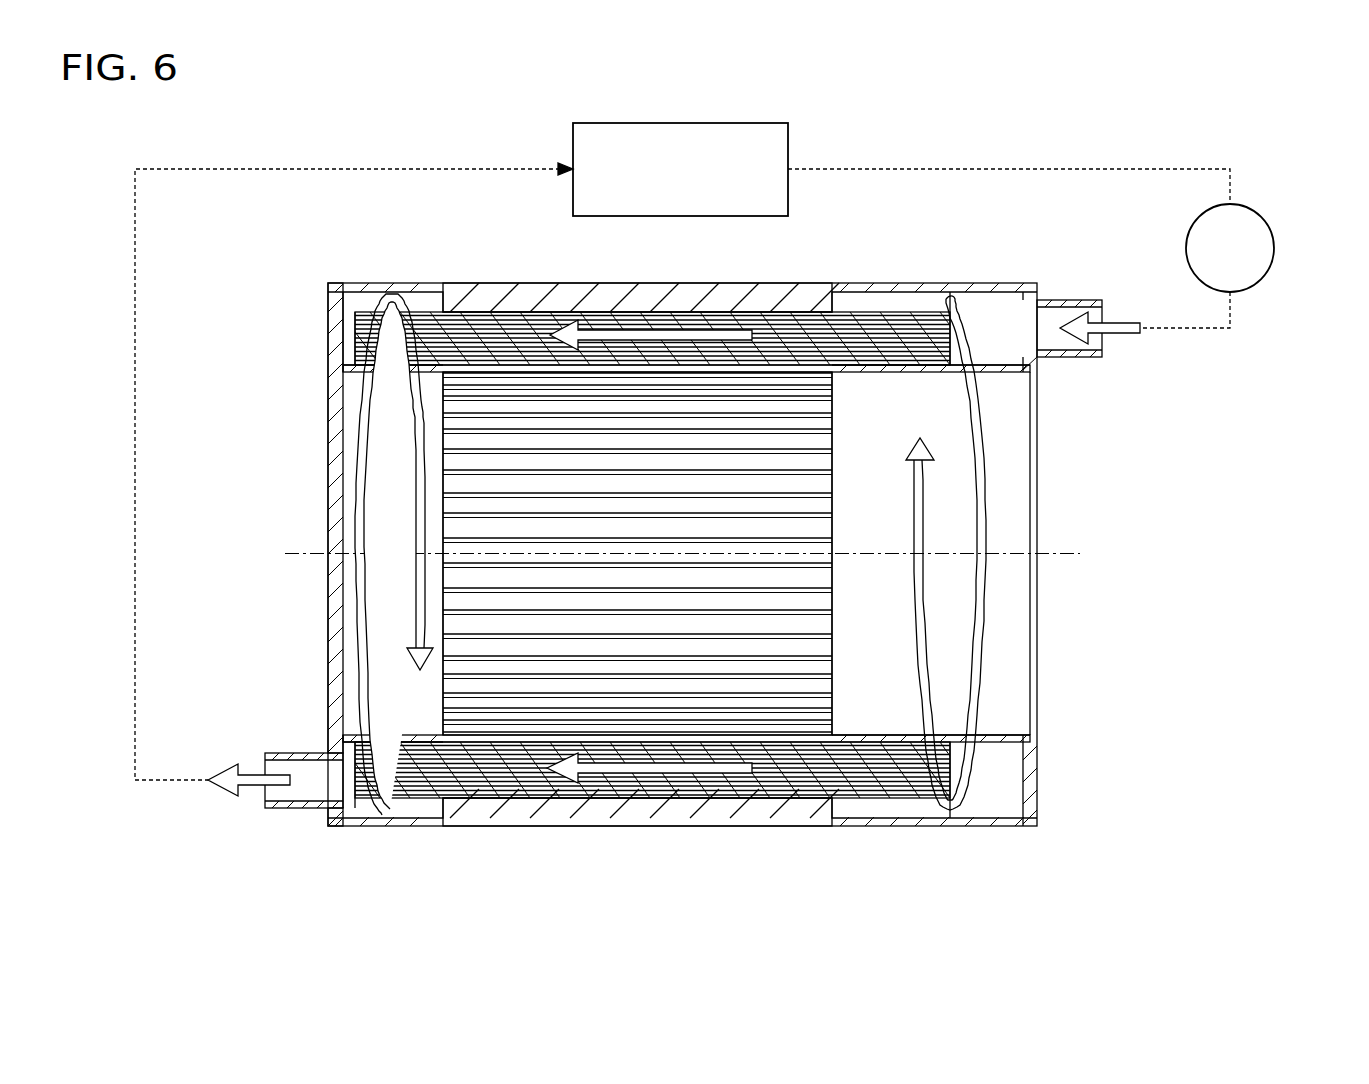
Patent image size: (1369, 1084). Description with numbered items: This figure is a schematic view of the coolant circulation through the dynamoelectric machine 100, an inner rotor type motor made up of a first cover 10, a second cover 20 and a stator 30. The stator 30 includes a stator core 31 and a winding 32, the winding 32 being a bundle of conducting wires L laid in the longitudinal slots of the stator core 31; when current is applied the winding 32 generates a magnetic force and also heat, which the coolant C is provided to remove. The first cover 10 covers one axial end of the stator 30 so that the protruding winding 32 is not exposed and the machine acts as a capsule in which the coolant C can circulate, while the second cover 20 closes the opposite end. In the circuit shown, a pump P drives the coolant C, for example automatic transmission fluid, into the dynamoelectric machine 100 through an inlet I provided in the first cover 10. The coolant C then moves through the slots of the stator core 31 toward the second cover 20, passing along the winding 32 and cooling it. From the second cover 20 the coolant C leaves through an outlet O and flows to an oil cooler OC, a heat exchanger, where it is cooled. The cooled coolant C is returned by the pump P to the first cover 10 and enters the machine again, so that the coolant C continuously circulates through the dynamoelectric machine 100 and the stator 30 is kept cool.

The dynamoelectric machine 100 is at (674, 565).
The first cover 10 is at (953, 283).
The second cover 20 is at (336, 324).
The stator 30 is at (488, 274).
The stator core 31 is at (727, 808).
The winding 32 is at (865, 300).
The conducting wire L is at (909, 312).
The coolant C is at (652, 310).
The inlet I is at (1066, 300).
The outlet O is at (302, 808).
The pump P is at (1275, 248).
The oil cooler OC is at (682, 123).